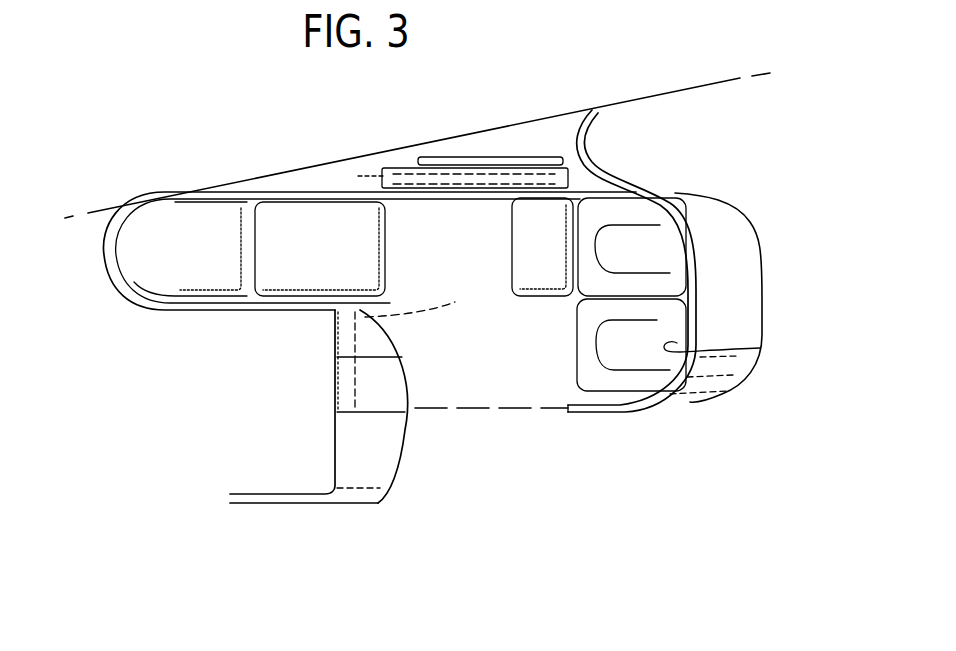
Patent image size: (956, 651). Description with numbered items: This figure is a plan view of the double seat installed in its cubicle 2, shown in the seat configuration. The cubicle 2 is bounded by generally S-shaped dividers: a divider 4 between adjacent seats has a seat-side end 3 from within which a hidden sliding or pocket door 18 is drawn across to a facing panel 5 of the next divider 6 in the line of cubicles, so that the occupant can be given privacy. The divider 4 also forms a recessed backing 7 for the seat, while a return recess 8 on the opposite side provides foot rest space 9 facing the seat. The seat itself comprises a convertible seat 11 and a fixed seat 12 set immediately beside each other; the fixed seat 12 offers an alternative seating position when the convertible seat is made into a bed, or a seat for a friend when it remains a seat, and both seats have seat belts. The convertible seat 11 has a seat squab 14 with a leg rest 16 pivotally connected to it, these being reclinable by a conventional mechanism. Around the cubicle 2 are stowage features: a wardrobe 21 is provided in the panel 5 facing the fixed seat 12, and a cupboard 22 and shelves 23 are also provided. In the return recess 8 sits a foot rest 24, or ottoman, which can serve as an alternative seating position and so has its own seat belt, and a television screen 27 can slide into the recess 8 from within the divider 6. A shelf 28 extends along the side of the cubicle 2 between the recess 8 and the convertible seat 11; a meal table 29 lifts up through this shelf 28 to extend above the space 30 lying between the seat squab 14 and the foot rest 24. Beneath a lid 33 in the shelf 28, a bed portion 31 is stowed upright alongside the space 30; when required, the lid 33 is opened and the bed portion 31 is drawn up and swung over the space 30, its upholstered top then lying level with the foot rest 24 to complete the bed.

The cubicle 2 is at (448, 362).
The seat-side end 3 is at (597, 410).
The divider 4 is at (690, 400).
The facing panel 5 is at (388, 493).
The next divider 6 is at (404, 440).
The recessed backing 7 is at (700, 355).
The return recess 8 is at (156, 301).
The foot rest space 9 is at (316, 226).
The convertible seat 11 is at (628, 250).
The fixed seat 12 is at (640, 332).
The seat squab 14 is at (657, 257).
The leg rest 16 is at (533, 297).
The sliding/pocket door 18 is at (518, 408).
The wardrobe 21 is at (360, 450).
The cupboard 22 is at (372, 388).
The shelves 23 is at (373, 344).
The foot rest 24 is at (367, 263).
The television screen 27 is at (428, 302).
The shelf 28 is at (493, 143).
The meal table 29 is at (447, 162).
The space 30 is at (468, 240).
The bed portion 31 is at (373, 173).
The lid 33 is at (533, 180).